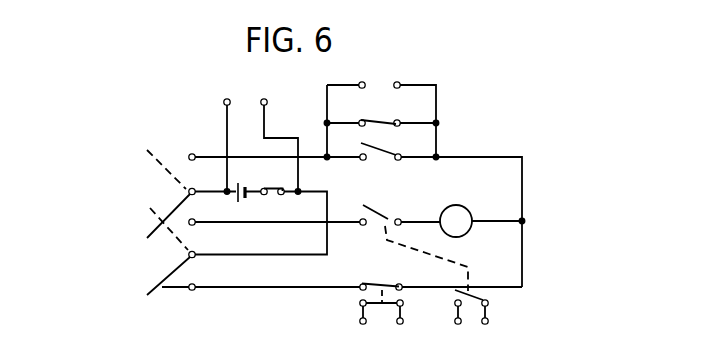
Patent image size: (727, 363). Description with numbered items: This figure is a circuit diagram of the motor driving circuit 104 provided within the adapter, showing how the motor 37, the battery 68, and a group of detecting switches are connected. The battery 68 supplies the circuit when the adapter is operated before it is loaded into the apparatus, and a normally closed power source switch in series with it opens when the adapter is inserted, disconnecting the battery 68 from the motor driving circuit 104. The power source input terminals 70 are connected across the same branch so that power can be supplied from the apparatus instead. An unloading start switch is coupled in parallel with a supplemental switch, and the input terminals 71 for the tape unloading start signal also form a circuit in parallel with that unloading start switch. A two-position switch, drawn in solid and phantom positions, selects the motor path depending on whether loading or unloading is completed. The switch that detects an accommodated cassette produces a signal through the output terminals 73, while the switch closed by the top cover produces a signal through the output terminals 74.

The motor driving circuit 104 is at (504, 78).
The power source input terminals 70 is at (272, 96).
The input terminals for a tape unloading start signal 71 is at (403, 79).
The battery 68 is at (235, 202).
The motor 37 is at (467, 232).
The output terminals 74 is at (405, 334).
The output terminals 73 is at (493, 334).